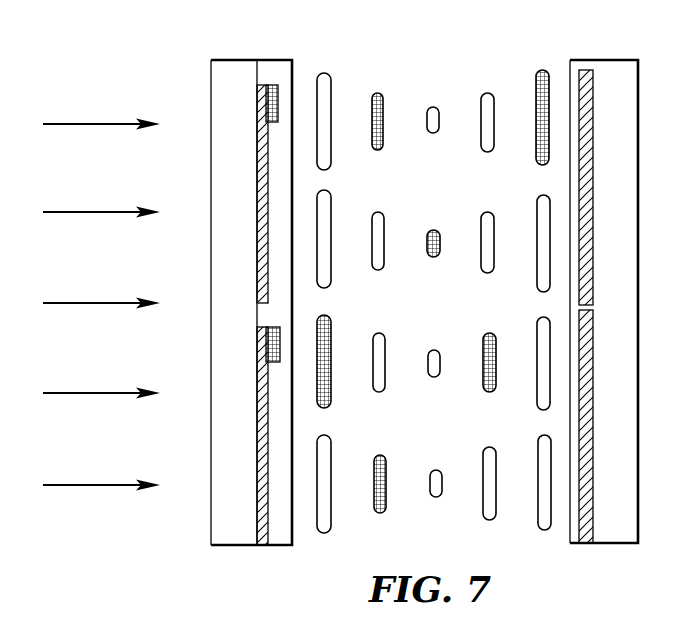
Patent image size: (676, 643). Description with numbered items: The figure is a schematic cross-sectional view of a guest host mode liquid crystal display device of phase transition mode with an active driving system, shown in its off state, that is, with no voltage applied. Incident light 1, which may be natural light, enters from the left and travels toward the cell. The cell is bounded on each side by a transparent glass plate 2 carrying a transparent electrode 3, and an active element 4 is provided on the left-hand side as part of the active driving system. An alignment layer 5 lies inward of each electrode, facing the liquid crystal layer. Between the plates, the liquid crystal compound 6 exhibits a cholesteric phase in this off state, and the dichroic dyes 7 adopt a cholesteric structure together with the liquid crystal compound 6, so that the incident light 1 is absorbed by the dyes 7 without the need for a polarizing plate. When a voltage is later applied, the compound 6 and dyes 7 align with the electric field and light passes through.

The incident light 1 is at (93, 124).
The transparent glass plate 2 is at (211, 86).
The transparent electrode 3 is at (264, 85).
The active element 4 is at (272, 84).
The alignment layer 5 is at (283, 107).
The liquid crystal compound 6 is at (430, 107).
The dichroic dyes 7 is at (534, 88).